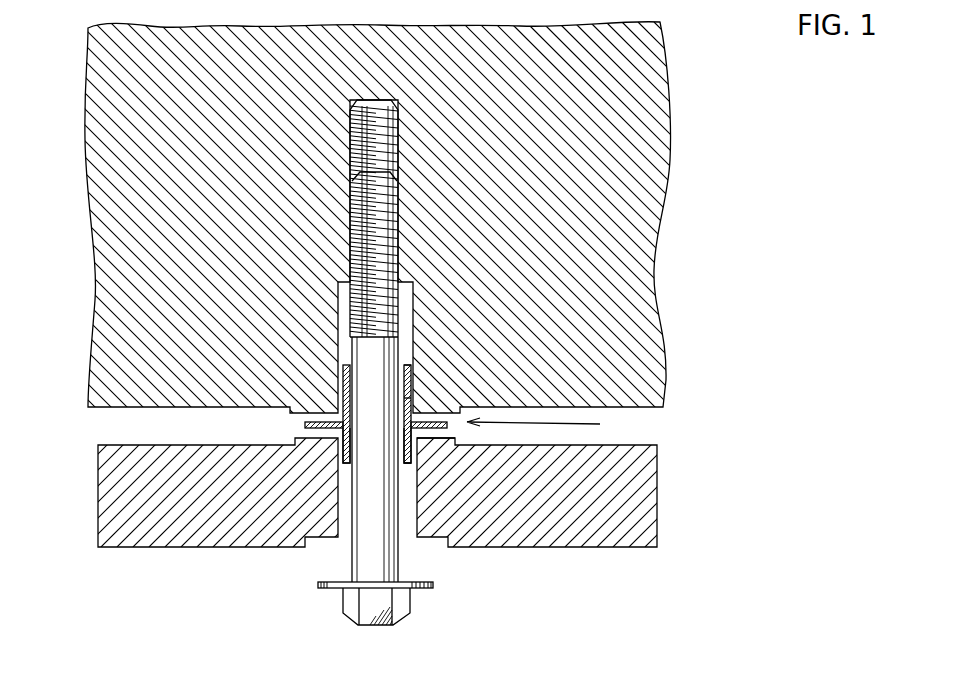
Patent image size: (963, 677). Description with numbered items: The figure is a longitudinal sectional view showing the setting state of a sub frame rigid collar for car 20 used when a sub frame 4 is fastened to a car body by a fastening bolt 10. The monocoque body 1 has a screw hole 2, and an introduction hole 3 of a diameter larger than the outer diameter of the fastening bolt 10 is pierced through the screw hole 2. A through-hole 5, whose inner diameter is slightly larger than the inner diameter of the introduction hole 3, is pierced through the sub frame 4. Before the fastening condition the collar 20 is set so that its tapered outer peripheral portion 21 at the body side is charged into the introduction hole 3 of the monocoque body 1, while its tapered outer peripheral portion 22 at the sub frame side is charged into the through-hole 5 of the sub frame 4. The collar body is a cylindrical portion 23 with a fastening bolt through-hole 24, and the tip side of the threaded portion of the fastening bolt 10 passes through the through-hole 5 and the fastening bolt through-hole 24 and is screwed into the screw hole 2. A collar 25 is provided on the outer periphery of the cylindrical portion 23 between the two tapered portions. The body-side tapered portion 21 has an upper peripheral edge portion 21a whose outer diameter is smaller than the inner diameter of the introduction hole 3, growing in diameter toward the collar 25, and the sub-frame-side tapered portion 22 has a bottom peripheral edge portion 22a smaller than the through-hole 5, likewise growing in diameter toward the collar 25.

The monocoque body 1 is at (115, 330).
The screw hole 2 is at (378, 127).
The introduction hole 3 is at (406, 307).
The sub frame 4 is at (603, 527).
The through-hole 5 is at (258, 545).
The fastening bolt 10 is at (403, 567).
The sub frame rigid collar for car 20 is at (600, 424).
The tapered outer peripheral portion at the body side 21 is at (343, 385).
The upper peripheral edge portion 21a is at (406, 356).
The tapered outer peripheral portion at the sub frame side 22 is at (341, 452).
The bottom peripheral edge portion 22a is at (412, 466).
The cylindrical portion 23 is at (410, 402).
The fastening bolt through-hole 24 is at (347, 399).
The collar 25 is at (435, 424).